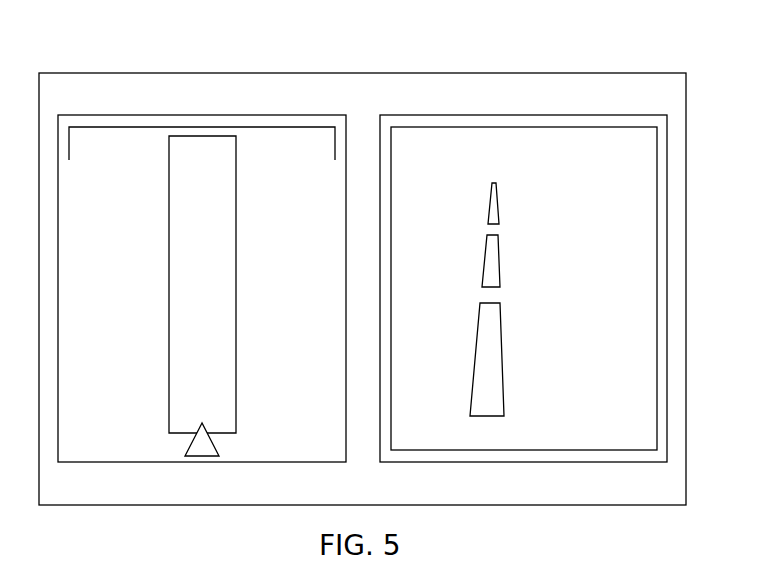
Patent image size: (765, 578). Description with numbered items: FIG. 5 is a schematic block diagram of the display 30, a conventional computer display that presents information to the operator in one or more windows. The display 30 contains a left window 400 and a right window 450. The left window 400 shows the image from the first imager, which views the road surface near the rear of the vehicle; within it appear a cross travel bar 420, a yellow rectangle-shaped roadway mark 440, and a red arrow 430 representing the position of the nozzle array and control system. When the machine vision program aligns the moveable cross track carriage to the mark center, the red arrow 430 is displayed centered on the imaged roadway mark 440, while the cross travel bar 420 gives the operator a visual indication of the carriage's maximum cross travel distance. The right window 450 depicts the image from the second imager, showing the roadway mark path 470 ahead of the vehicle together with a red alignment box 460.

The display 30 is at (393, 64).
The left window 400 is at (210, 115).
The cross travel bar 420 is at (130, 127).
The red arrow 430 is at (205, 456).
The roadway mark 440 is at (223, 290).
The right window 450 is at (542, 115).
The red alignment box 460 is at (593, 127).
The roadway mark path 470 is at (499, 205).